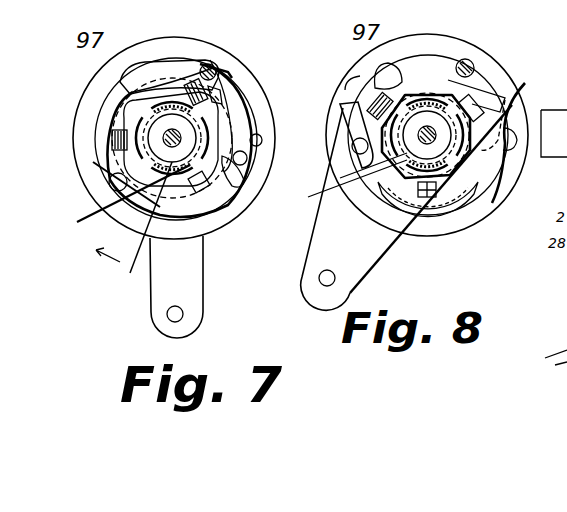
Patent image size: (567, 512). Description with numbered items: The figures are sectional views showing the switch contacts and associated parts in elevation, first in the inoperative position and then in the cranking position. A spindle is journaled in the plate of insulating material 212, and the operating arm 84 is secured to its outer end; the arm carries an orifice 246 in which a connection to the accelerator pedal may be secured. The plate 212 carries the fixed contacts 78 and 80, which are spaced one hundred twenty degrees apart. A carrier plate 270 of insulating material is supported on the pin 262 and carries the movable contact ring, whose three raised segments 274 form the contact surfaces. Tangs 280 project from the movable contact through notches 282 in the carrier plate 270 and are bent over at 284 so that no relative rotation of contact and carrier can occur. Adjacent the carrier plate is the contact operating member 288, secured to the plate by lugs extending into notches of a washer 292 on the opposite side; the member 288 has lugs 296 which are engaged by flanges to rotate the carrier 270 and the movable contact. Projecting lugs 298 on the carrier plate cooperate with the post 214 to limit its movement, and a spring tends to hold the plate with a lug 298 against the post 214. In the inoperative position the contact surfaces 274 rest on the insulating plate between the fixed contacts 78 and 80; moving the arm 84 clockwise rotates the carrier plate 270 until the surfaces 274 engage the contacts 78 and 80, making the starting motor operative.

In FIG. 7, the fixed contact 78 is at (122, 70).
In FIG. 8, the fixed contact 78 is at (384, 64).
In FIG. 7, the fixed contact 80 is at (262, 140).
In FIG. 8, the fixed contact 80 is at (520, 150).
In FIG. 7, the operating arm 84 is at (186, 281).
In FIG. 8, the operating arm 84 is at (360, 254).
In FIG. 7, the plate of insulating material 212 is at (84, 113).
In FIG. 8, the plate of insulating material 212 is at (445, 226).
In FIG. 7, the post 214 is at (220, 86).
In FIG. 8, the post 214 is at (470, 63).
In FIG. 7, the orifice 246 is at (168, 315).
In FIG. 8, the orifice 246 is at (336, 280).
In FIG. 7, the pin 262 is at (172, 129).
In FIG. 8, the pin 262 is at (427, 126).
In FIG. 7, the carrier plate 270 is at (228, 110).
In FIG. 8, the carrier plate 270 is at (452, 98).
In FIG. 7, the raised segments 274 is at (214, 206).
In FIG. 8, the raised segments 274 is at (486, 208).
In FIG. 7, the tangs 280 is at (113, 140).
In FIG. 8, the tangs 280 is at (390, 96).
In FIG. 7, the notches 282 is at (218, 92).
In FIG. 8, the notches 282 is at (476, 108).
In FIG. 7, the bent over portions 284 is at (214, 68).
In FIG. 7, the contact operating member 288 is at (66, 236).
In FIG. 8, the contact operating member 288 is at (306, 211).
In FIG. 8, the washer 292 is at (554, 133).
In FIG. 7, the lugs 296 is at (300, 238).
In FIG. 8, the lugs 296 is at (340, 198).
In FIG. 7, the projecting lugs 298 is at (232, 78).
In FIG. 8, the projecting lugs 298 is at (345, 125).